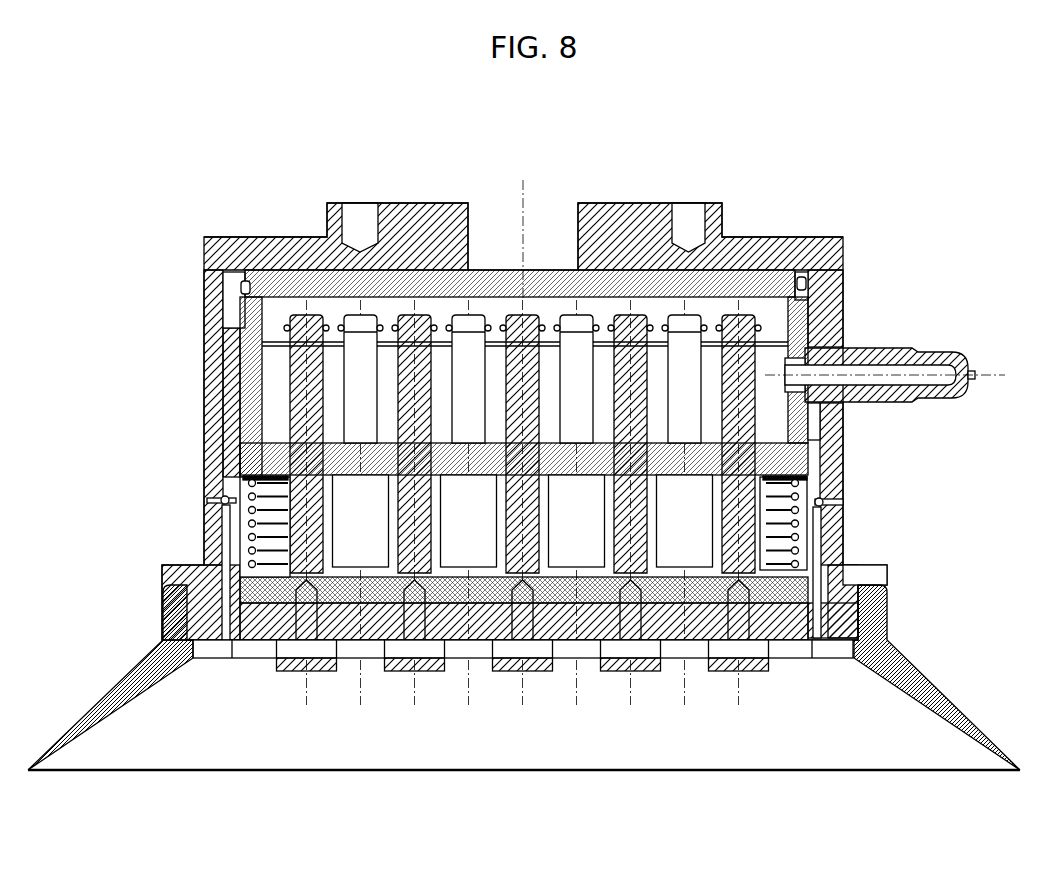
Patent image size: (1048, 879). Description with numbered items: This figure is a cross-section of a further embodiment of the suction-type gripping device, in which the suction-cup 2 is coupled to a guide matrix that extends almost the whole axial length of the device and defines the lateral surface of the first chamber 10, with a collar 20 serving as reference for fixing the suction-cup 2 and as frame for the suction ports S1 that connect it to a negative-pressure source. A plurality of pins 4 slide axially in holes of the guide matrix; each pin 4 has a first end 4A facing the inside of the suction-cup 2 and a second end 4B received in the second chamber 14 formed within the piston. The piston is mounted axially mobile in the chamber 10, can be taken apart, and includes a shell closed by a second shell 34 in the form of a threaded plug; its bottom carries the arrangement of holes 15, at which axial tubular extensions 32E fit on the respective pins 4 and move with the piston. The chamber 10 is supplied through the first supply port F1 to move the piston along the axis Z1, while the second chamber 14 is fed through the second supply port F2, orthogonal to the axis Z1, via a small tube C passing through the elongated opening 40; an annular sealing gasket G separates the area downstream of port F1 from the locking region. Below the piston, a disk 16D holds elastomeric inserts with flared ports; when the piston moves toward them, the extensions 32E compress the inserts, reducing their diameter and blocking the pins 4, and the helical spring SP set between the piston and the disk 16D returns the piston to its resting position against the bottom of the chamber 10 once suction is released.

The suction-cup 2 is at (918, 720).
The pins 4 is at (777, 688).
The first end of pin 4A is at (735, 672).
The second end of pin 4B is at (300, 318).
The first chamber 10 is at (815, 320).
The second chamber 14 is at (258, 380).
The second arrangement of holes 15 is at (598, 455).
The disk 16D is at (253, 598).
The collar 20 is at (887, 577).
The axial tubular extensions 32E is at (352, 742).
The second shell 34 is at (393, 283).
The through opening 40 is at (830, 410).
The small tube C is at (910, 348).
The first supply port F1 is at (566, 212).
The second supply port F2 is at (959, 344).
The annular sealing gasket G is at (240, 290).
The suction ports S1 is at (218, 500).
The elastic element SP is at (800, 535).
The axis Z1 is at (530, 185).